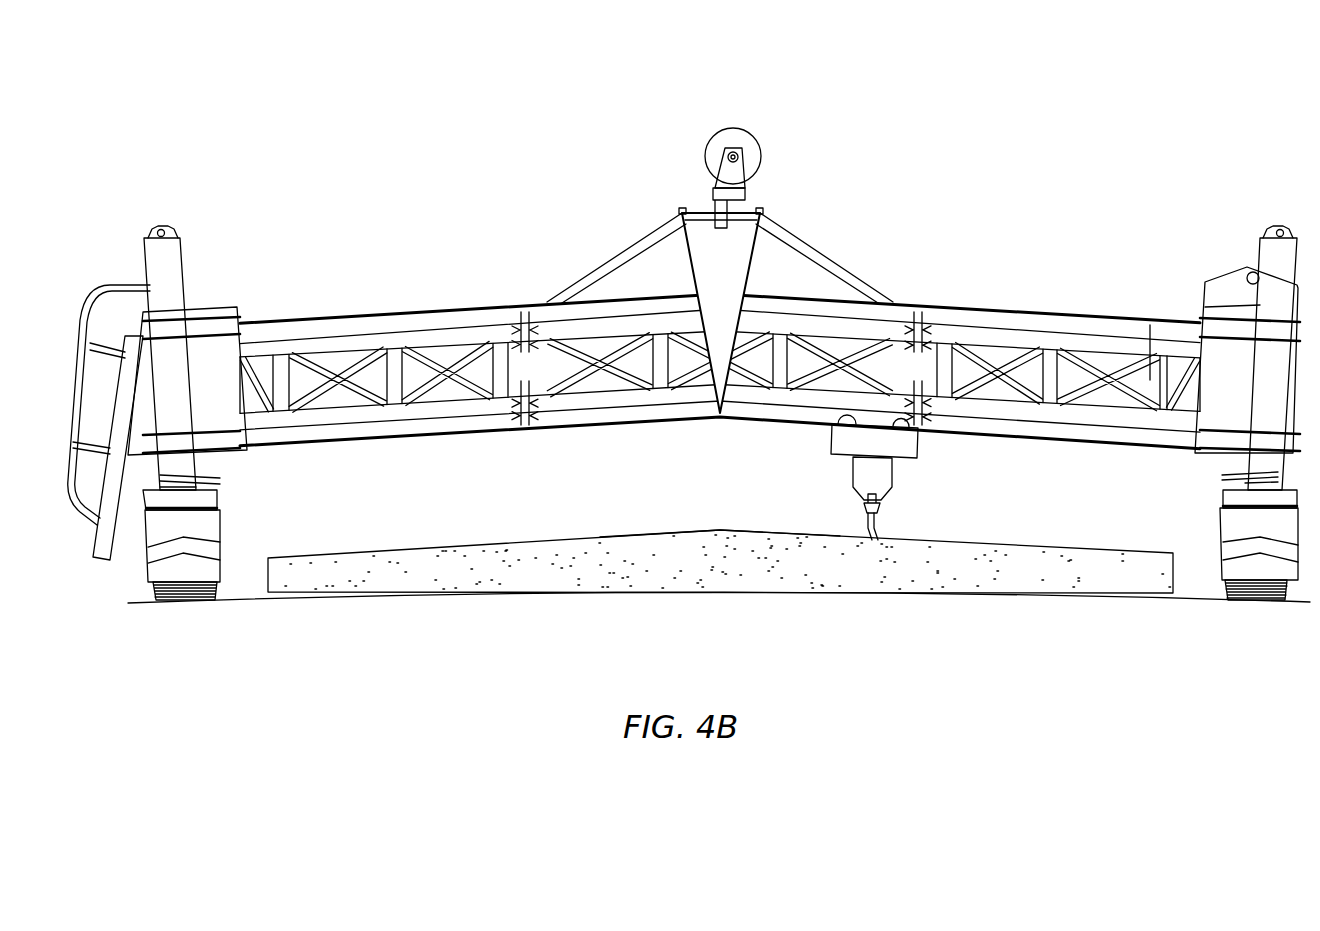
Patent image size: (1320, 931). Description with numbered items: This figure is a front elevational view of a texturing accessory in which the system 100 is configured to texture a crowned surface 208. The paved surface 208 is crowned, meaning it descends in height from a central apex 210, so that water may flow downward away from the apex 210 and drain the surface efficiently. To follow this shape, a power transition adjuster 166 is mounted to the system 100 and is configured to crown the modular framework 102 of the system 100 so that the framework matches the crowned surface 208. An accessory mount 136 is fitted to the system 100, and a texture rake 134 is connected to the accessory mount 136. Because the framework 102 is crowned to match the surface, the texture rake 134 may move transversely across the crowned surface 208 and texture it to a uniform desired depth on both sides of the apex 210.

The system 100 is at (308, 158).
The modular framework 102 is at (325, 318).
The power transition adjuster 166 is at (700, 213).
The texture rake 134 is at (860, 507).
The accessory mount 136 is at (912, 443).
The crowned surface 208 is at (433, 578).
The central apex 210 is at (720, 530).